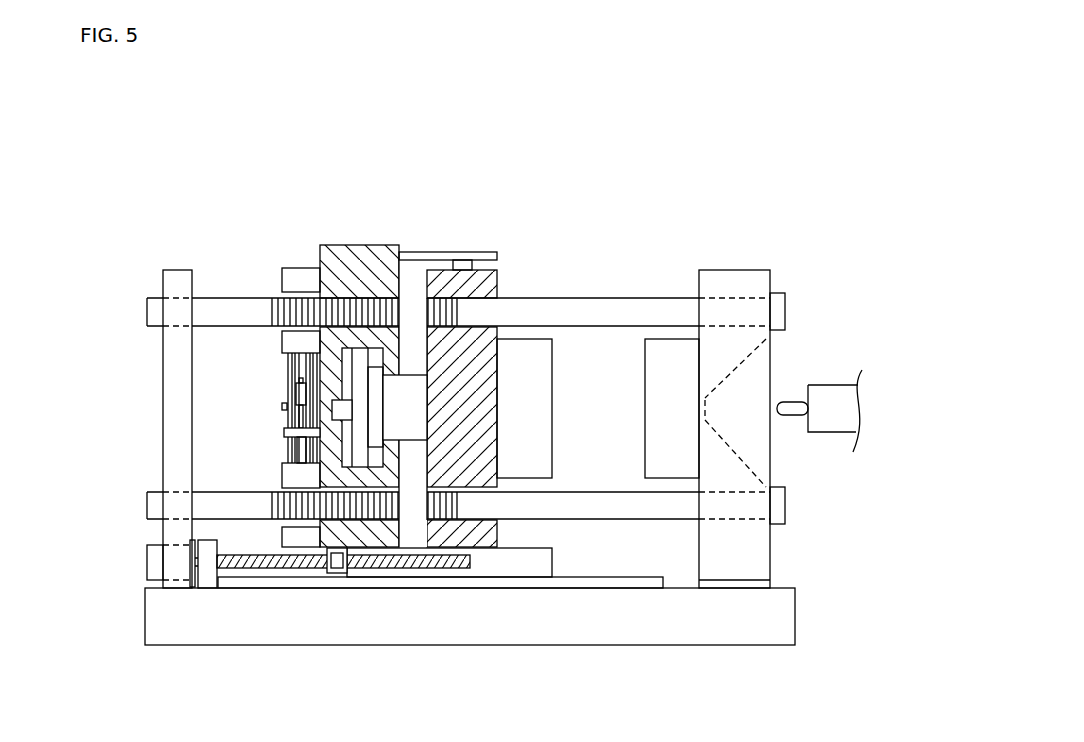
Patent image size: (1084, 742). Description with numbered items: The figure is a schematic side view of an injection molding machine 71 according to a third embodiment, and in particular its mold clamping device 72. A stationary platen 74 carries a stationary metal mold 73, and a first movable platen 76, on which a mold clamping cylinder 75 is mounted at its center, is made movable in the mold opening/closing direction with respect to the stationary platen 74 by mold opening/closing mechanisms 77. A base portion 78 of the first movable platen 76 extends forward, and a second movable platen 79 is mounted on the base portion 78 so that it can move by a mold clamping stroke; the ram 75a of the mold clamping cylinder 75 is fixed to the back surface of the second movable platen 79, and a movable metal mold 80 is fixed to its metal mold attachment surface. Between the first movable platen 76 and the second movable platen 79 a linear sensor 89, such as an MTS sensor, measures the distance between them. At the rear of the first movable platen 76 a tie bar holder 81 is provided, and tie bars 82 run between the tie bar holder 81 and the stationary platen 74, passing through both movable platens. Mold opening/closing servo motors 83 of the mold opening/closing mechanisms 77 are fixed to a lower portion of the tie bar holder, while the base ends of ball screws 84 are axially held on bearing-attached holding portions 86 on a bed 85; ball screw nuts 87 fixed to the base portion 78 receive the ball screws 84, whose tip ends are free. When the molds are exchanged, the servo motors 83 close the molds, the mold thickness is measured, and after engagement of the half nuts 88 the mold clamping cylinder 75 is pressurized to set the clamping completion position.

The injection molding machine 71 is at (800, 215).
The mold clamping device 72 is at (438, 208).
The stationary metal mold 73 is at (690, 421).
The stationary platen 74 is at (737, 275).
The mold clamping cylinder 75 is at (362, 478).
The ram 75a is at (410, 427).
The first movable platen 76 is at (320, 245).
The mold opening/closing mechanism 77 is at (268, 569).
The base portion 78 is at (532, 568).
The second movable platen 79 is at (497, 280).
The movable metal mold 80 is at (540, 421).
The tie bar holder 81 is at (175, 278).
The tie bar 82 is at (650, 300).
The mold opening/closing servo motor 83 is at (155, 560).
The ball screw 84 is at (438, 565).
The bed 85 is at (780, 608).
The bearing-attached holding portion 86 is at (220, 580).
The ball screw nut 87 is at (335, 572).
The half nut 88 is at (300, 287).
The linear sensor 89 is at (465, 252).